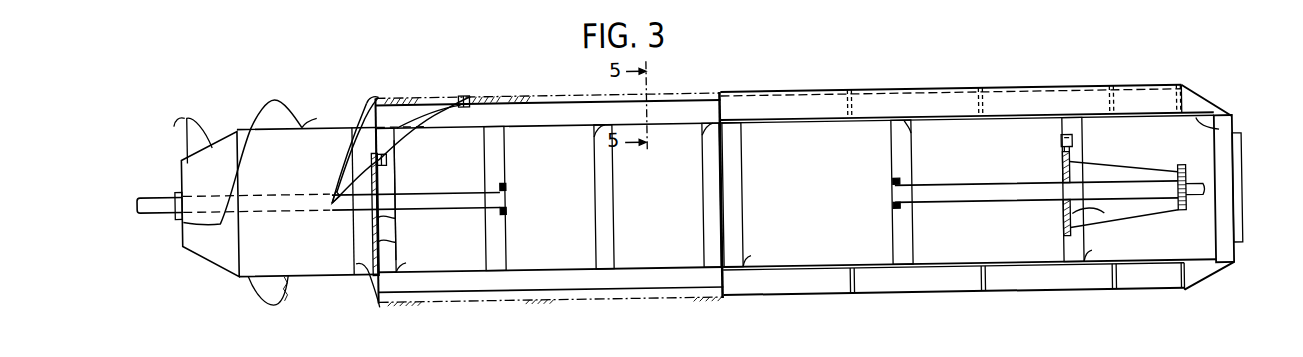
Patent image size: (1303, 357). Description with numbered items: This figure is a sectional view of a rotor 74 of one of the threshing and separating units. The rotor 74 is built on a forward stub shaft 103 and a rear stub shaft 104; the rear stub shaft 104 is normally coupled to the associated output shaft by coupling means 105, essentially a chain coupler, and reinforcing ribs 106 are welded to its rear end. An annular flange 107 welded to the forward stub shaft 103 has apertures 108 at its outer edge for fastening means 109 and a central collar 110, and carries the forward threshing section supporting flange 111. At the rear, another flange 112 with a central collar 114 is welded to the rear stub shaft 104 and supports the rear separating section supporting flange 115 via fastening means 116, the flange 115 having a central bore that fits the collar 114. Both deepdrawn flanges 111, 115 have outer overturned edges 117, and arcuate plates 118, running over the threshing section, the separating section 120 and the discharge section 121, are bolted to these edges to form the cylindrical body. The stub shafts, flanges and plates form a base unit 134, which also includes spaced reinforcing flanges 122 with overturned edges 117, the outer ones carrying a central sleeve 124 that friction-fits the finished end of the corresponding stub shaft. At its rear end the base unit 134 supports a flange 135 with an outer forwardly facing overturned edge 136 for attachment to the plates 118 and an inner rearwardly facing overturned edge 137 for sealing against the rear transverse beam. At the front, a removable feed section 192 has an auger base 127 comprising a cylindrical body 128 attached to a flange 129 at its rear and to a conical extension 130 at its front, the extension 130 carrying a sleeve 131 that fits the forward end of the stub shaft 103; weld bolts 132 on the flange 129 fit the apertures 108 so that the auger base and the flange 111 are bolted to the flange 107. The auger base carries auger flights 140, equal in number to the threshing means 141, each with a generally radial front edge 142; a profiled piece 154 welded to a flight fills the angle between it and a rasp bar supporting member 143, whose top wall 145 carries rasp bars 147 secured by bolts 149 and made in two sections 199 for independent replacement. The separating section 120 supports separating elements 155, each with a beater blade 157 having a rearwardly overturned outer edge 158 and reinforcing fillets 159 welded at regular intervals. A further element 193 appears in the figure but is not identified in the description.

The rotor 74 is at (713, 84).
The forward stub shaft 103 is at (157, 208).
The rear stub shaft 104 is at (1012, 206).
The coupling means 105 is at (1178, 173).
The reinforcing ribs 106 is at (1111, 167).
The annular flange 107 is at (372, 223).
The apertures 108 is at (395, 237).
The fastening means 109 is at (388, 156).
The central collar 110 is at (395, 214).
The forward threshing section supporting flange 111 is at (395, 177).
The rear flange 112 is at (1104, 222).
The central collar 114 is at (1063, 207).
The rear separating section supporting flange 115 is at (1062, 133).
The fastening means 116 is at (1059, 153).
The overturned edges 117 is at (398, 267).
The arcuate plates 118 is at (542, 124).
The separating section 120 is at (785, 86).
The discharge section 121 is at (1097, 90).
The reinforcing flanges 122 is at (506, 157).
The central sleeve 124 is at (506, 210).
The auger base 127 is at (322, 122).
The cylindrical body 128 is at (321, 272).
The flange 129 is at (360, 257).
The conical extension 130 is at (183, 154).
The sleeve 131 is at (181, 184).
The weld bolts 132 is at (344, 160).
The base unit 134 is at (1047, 270).
The flange 135 is at (1214, 141).
The outer forwardly facing overturned edge 136 is at (1197, 125).
The inner rearwardly facing overturned edge 137 is at (1243, 138).
The auger flights 140 is at (276, 92).
The threshing means 141 is at (520, 84).
The front edge 142 is at (176, 116).
The rasp bar supporting members 143 is at (422, 108).
The top wall 145 is at (607, 100).
The rasp bars 147 is at (406, 92).
The bolts 149 is at (472, 93).
The profiled piece 154 is at (372, 98).
The separating elements 155 is at (870, 88).
The beater blade 157 is at (928, 90).
The overturned outer edge 158 is at (924, 292).
The reinforcing fillets 159 is at (848, 279).
The removable feed section 192 is at (306, 93).
The leading flight 193 is at (214, 110).
The rasp bar sections 199 is at (508, 95).